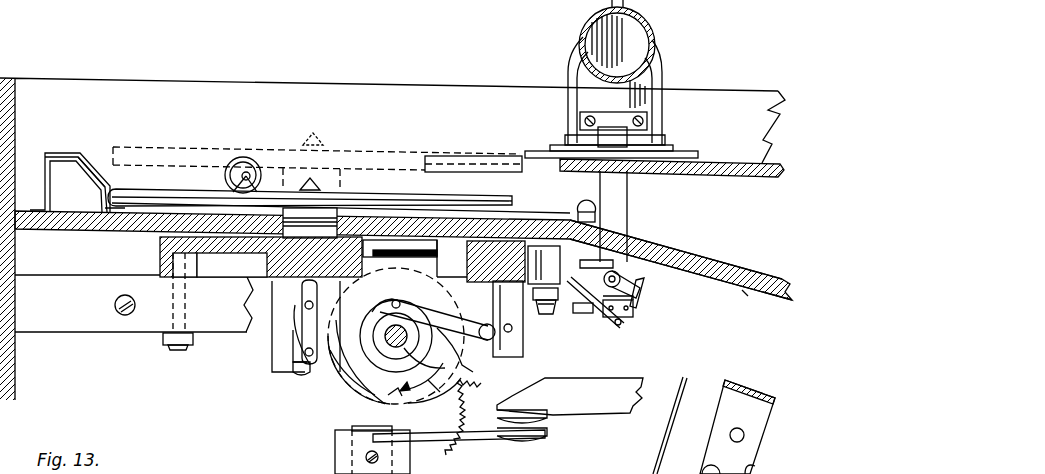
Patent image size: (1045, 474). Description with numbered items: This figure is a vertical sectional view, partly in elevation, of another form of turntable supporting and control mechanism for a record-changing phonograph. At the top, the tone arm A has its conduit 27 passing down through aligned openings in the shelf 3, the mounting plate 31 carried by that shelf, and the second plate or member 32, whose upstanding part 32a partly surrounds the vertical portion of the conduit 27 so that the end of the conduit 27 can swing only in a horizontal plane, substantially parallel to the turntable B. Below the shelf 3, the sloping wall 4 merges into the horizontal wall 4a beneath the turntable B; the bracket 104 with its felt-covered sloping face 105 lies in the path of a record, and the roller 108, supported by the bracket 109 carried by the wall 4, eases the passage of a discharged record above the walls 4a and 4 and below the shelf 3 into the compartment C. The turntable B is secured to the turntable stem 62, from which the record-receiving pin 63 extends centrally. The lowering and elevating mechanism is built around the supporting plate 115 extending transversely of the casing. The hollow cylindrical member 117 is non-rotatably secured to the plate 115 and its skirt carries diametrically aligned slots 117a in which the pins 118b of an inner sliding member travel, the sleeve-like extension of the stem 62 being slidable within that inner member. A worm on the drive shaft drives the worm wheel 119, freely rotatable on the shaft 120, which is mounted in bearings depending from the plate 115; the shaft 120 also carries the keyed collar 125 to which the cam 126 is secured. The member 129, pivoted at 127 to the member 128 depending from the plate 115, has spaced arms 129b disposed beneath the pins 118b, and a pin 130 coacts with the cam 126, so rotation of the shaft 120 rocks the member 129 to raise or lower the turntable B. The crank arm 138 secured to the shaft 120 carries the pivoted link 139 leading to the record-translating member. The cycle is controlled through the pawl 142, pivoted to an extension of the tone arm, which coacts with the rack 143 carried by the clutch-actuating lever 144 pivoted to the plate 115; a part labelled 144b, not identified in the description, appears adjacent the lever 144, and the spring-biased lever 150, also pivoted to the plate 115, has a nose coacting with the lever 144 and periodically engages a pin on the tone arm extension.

The tone arm A is at (658, 27).
The turntable B is at (393, 186).
The compartment C is at (742, 290).
The shelf 3 is at (760, 180).
The sloping wall 4 is at (727, 272).
The horizontal wall 4a is at (108, 228).
The conduit 27 is at (580, 75).
The mounting plate 31 is at (690, 155).
The second plate or member 32 is at (652, 140).
The upstanding part 32a is at (660, 73).
The turntable stem 62 is at (337, 212).
The record-receiving pin 63 is at (320, 178).
The bracket 104 is at (62, 155).
The sloping face 105 is at (95, 170).
The roller 108 is at (587, 198).
The bracket 109 is at (577, 215).
The supporting plate 115 is at (232, 250).
The hollow cylindrical member 117 is at (242, 345).
The slots 117a is at (308, 352).
The pins or projections 118b is at (312, 372).
The worm wheel 119 is at (428, 380).
The shaft 120 is at (355, 468).
The third sleeve or collar 125 is at (372, 380).
The cam 126 is at (395, 390).
The pivot 127 is at (505, 358).
The member 128 is at (515, 335).
The member 129 is at (455, 358).
The spaced arms 129b is at (335, 395).
The pin 130 is at (385, 348).
The crank arm 138 is at (475, 440).
The link 139 is at (620, 402).
The pawl 142 is at (645, 297).
The rack 143 is at (640, 316).
The clutch-actuating lever 144 is at (597, 312).
The rod 144b is at (665, 450).
The lever 150 is at (556, 300).